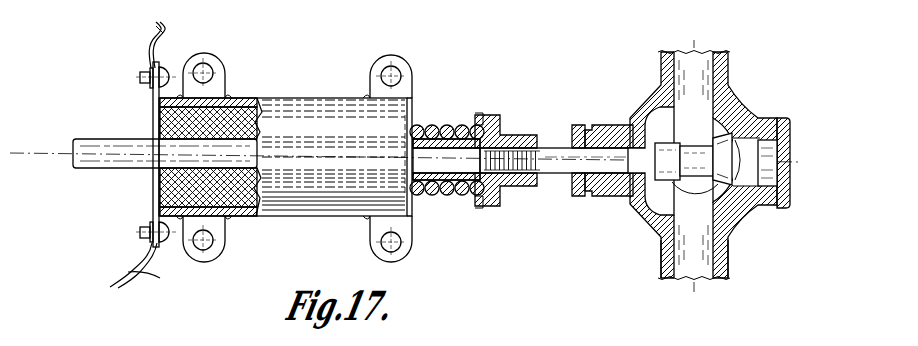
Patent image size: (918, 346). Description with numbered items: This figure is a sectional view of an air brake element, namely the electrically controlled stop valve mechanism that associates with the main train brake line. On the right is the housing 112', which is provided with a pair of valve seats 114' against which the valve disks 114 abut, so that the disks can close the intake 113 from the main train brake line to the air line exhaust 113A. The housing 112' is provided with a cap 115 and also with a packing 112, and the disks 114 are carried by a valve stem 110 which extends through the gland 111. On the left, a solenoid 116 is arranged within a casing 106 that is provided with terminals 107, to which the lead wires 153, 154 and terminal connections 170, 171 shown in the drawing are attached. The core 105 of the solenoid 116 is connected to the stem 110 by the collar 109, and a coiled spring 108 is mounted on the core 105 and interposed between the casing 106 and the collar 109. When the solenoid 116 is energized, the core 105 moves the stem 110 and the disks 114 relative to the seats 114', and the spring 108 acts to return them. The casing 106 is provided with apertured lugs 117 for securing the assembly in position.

The core 105 is at (98, 150).
The casing 106 is at (318, 125).
The terminals 107 is at (141, 74).
The coiled spring 108 is at (457, 196).
The collar 109 is at (527, 130).
The valve stem 110 is at (558, 178).
The gland 111 is at (578, 125).
The packing 112 is at (615, 117).
The housing 112' is at (613, 211).
The intake 113 is at (690, 60).
The air line exhaust 113A is at (706, 279).
The valve disks 114 is at (738, 122).
The valve seats 114' is at (760, 129).
The cap 115 is at (786, 210).
The solenoid 116 is at (226, 98).
The apertured lugs 117 is at (210, 70).
The lead wire 153 is at (127, 268).
The lead wire 154 is at (156, 23).
The terminal 170 is at (158, 278).
The terminal 171 is at (163, 34).